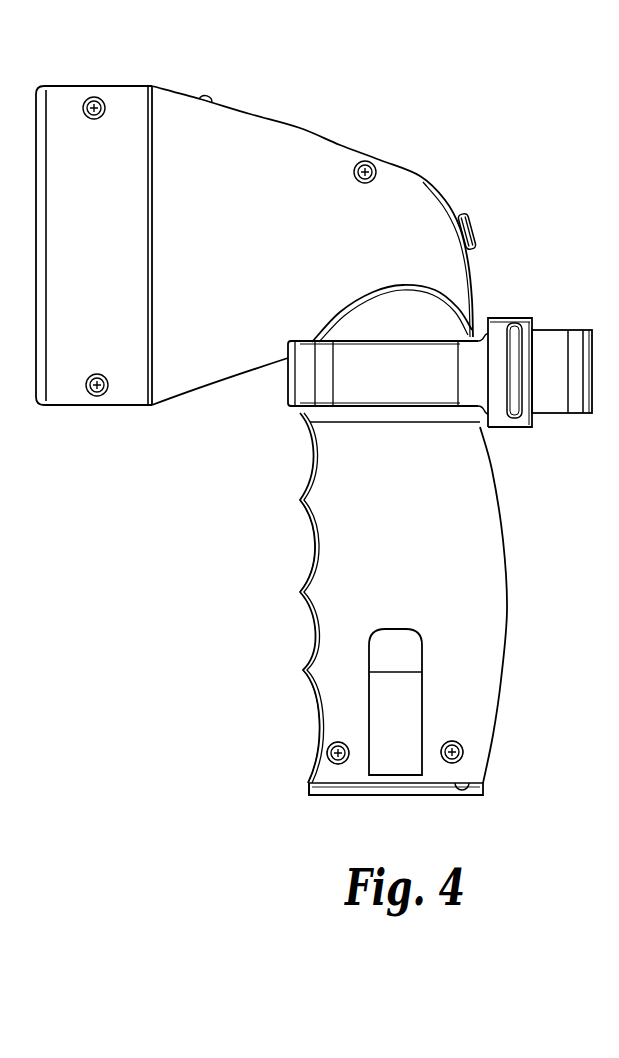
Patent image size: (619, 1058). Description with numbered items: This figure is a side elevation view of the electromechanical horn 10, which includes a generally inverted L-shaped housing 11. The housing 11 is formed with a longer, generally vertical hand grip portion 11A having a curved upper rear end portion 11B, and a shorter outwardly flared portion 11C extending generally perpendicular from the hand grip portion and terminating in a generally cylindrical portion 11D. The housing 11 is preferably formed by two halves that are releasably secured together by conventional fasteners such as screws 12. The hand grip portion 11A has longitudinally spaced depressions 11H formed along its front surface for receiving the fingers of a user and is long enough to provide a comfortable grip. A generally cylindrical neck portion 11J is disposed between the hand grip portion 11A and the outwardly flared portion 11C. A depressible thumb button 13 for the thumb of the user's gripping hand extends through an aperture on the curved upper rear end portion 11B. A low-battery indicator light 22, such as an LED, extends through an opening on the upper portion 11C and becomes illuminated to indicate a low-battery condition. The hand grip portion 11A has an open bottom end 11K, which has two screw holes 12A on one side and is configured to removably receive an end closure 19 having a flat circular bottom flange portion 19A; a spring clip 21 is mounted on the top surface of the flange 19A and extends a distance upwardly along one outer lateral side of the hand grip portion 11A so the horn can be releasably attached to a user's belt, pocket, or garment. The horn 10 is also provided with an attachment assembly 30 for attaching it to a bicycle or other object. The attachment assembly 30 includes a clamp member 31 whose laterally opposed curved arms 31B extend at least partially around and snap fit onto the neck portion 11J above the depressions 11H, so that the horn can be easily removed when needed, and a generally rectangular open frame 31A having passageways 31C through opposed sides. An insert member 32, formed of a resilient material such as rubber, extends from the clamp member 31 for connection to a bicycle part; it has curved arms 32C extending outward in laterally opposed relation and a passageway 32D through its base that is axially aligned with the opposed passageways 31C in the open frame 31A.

The horn 10 is at (456, 94).
The housing 11 is at (295, 430).
The hand grip portion 11A is at (418, 540).
The curved upper rear end portion 11B is at (428, 181).
The outwardly flared portion 11C is at (250, 260).
The cylindrical portion 11D is at (82, 408).
The depressions 11H is at (300, 526).
The neck portion 11J is at (370, 428).
The open bottom end 11K is at (470, 780).
The screws 12 is at (93, 121).
The screw holes 12A is at (328, 758).
The thumb button 13 is at (477, 228).
The end closure 19 is at (332, 797).
The bottom flange portion 19A is at (308, 790).
The spring clip 21 is at (406, 726).
The low-battery indicator light 22 is at (210, 99).
The attachment assembly 30 is at (500, 283).
The clamp member 31 is at (388, 378).
The open frame 31A is at (523, 376).
The curved arms 31B is at (405, 379).
The passageways 31C is at (518, 328).
The insert member 32 is at (560, 381).
The curved arms 32C is at (553, 403).
The passageway 32D is at (518, 410).